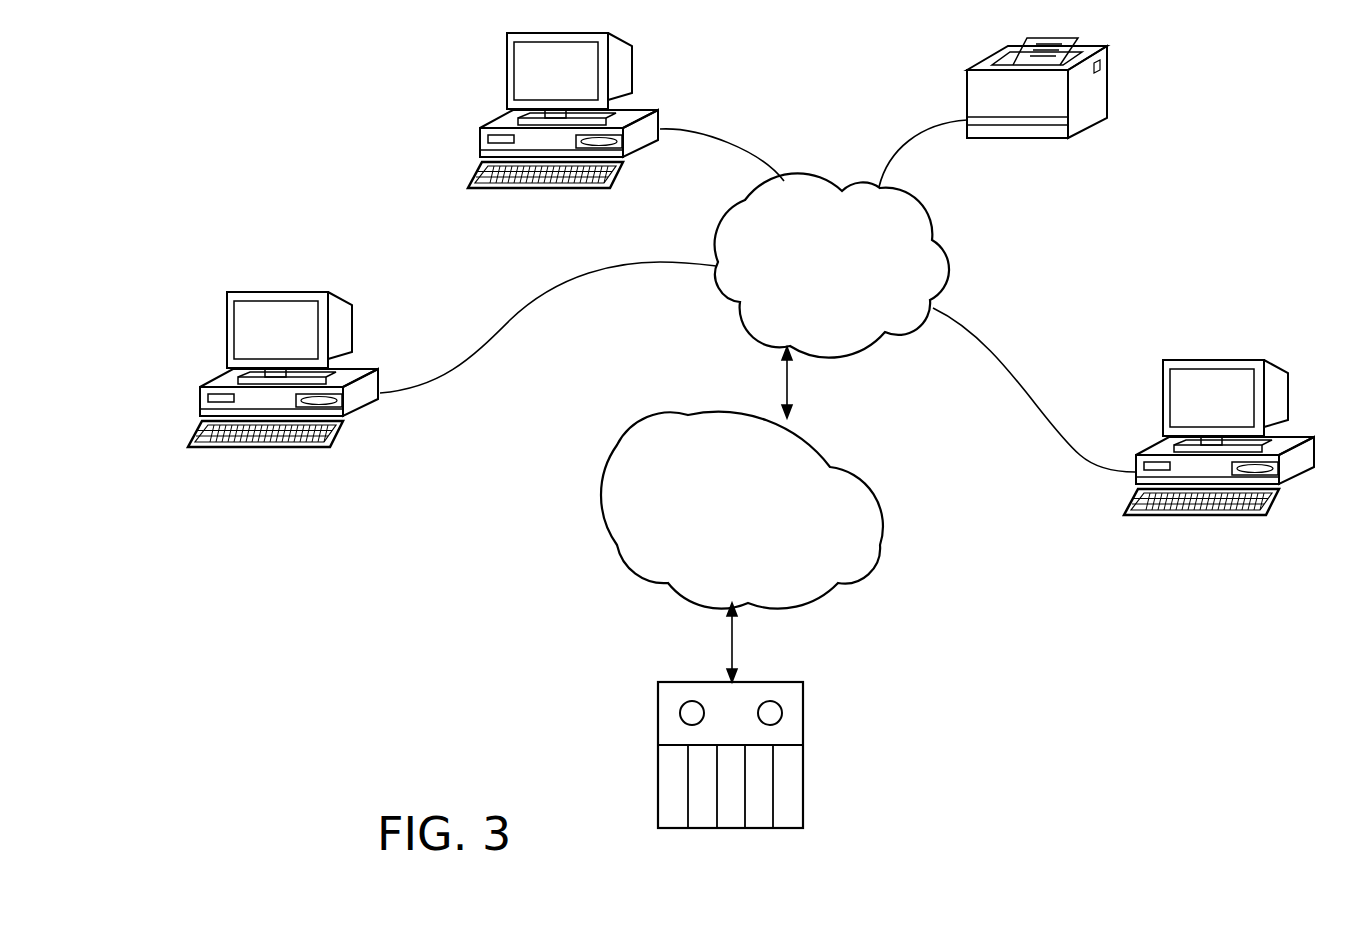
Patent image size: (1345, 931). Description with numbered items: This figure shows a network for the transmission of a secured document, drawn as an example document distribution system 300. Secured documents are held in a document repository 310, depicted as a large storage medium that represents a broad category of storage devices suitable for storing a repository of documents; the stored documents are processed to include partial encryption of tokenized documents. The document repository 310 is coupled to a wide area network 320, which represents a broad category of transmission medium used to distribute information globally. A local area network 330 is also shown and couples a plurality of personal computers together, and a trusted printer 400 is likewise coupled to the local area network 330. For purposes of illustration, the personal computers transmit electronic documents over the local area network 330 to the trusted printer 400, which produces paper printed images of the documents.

The document management system 300 is at (381, 662).
The document repository 310 is at (806, 695).
The wide area network 320 is at (890, 512).
The local area network 330 is at (934, 240).
The trusted printer 400 is at (1108, 88).